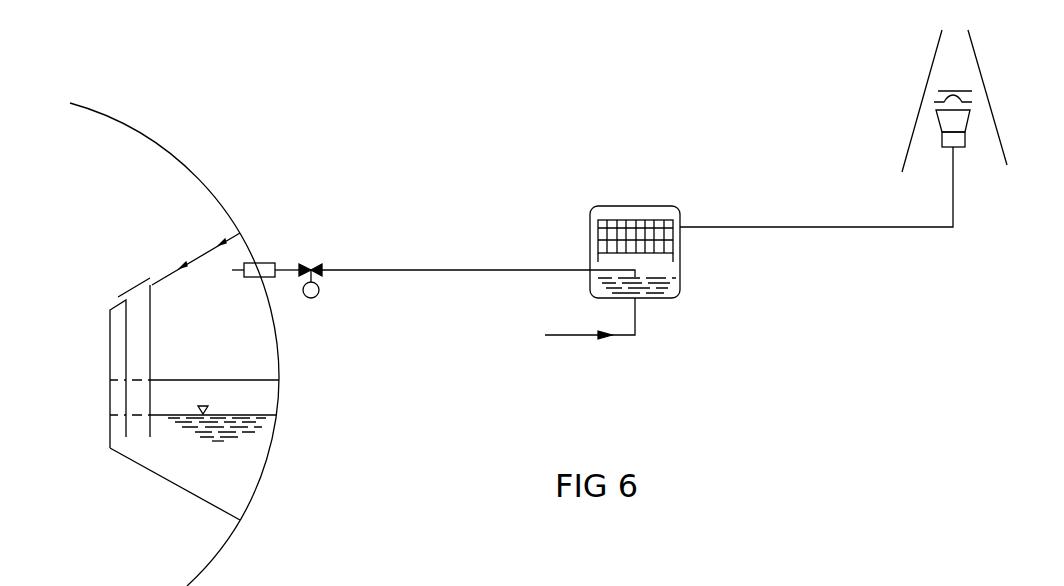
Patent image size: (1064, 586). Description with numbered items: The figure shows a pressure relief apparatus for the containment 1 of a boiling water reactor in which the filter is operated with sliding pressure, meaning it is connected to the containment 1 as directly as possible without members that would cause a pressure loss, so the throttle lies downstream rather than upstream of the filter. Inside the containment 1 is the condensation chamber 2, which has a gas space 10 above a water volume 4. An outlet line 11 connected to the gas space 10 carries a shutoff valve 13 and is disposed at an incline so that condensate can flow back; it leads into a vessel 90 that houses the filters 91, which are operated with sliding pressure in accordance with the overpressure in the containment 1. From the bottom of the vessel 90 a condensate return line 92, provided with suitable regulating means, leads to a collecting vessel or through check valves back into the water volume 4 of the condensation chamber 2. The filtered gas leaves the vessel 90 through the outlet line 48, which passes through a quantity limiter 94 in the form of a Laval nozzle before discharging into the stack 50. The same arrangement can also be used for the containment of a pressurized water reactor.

The containment 1 is at (158, 152).
The condensation chamber 2 is at (172, 485).
The water volume 4 is at (230, 463).
The gas space 10 is at (240, 255).
The outlet line 11 is at (453, 272).
The shutoff valve 13 is at (317, 267).
The outlet line 48 is at (882, 228).
The stack 50 is at (925, 83).
The vessel 90 is at (682, 275).
The filters 91 is at (657, 235).
The condensate return line 92 is at (613, 338).
The quantity limiter 94 is at (968, 122).